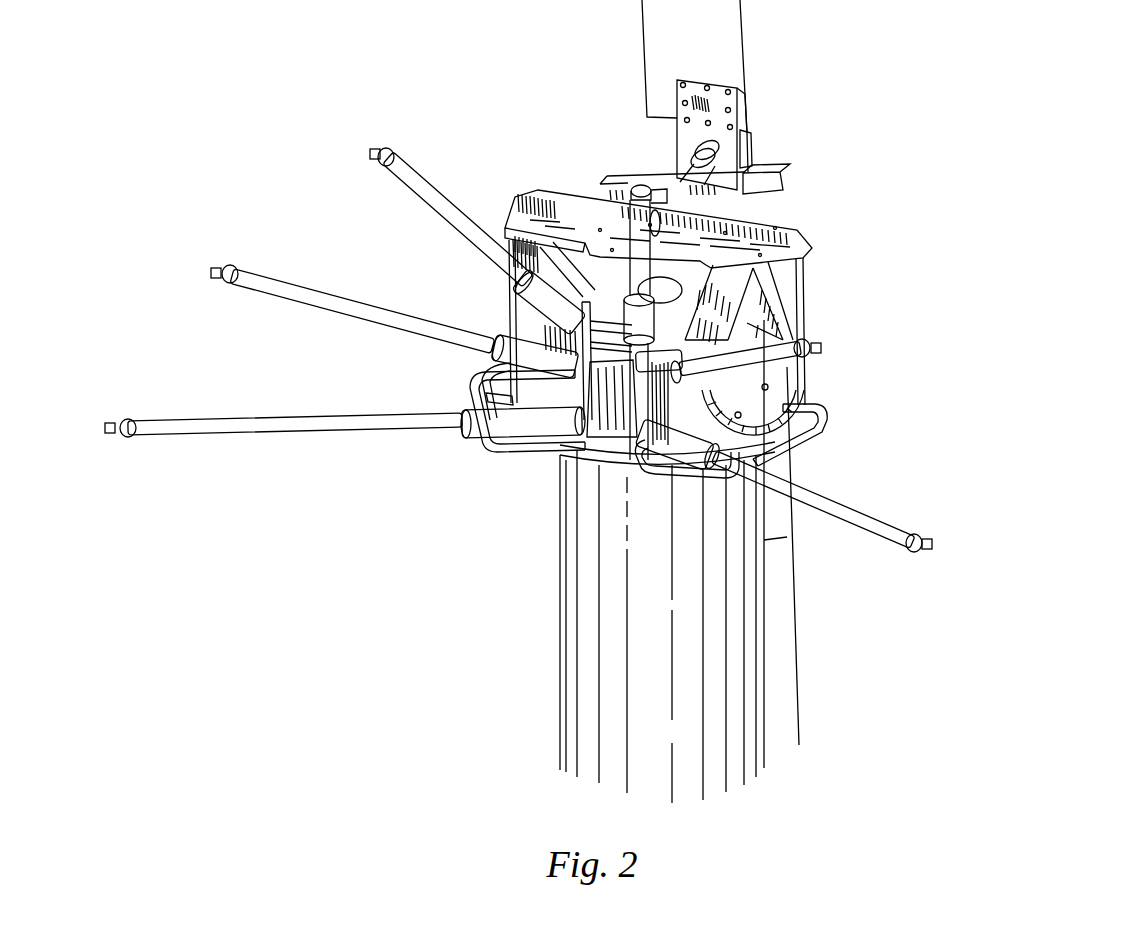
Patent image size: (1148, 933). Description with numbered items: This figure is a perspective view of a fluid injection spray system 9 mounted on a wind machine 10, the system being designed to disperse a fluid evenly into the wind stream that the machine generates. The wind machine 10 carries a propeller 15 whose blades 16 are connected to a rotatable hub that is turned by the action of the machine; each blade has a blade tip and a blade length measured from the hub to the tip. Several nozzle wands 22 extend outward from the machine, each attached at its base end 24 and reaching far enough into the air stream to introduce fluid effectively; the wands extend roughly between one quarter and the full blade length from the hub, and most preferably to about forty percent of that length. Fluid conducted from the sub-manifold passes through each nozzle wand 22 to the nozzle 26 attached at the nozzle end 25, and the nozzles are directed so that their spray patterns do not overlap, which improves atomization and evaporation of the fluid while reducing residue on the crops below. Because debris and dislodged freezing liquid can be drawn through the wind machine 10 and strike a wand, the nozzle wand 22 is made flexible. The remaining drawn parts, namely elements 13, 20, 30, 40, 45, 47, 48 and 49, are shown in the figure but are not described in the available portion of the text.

The fluid injection system 9 is at (356, 546).
The wind machine 10 is at (518, 94).
The pole 13 is at (580, 590).
The propeller 15 is at (772, 143).
The blades 16 is at (733, 46).
The actuator 20 is at (345, 453).
The nozzle wand 22 is at (380, 316).
The base end 24 is at (630, 455).
The nozzle end 25 is at (247, 272).
The nozzle 26 is at (212, 277).
The pivot disk 30 is at (785, 420).
The clamp bracket 40 is at (820, 408).
The frame 45 is at (810, 287).
The U-clamp 47 is at (580, 425).
The piston rod 48 is at (348, 425).
The cylinder body 49 is at (545, 420).